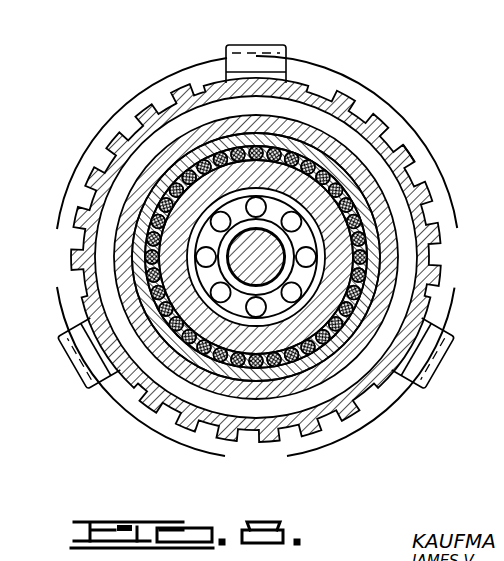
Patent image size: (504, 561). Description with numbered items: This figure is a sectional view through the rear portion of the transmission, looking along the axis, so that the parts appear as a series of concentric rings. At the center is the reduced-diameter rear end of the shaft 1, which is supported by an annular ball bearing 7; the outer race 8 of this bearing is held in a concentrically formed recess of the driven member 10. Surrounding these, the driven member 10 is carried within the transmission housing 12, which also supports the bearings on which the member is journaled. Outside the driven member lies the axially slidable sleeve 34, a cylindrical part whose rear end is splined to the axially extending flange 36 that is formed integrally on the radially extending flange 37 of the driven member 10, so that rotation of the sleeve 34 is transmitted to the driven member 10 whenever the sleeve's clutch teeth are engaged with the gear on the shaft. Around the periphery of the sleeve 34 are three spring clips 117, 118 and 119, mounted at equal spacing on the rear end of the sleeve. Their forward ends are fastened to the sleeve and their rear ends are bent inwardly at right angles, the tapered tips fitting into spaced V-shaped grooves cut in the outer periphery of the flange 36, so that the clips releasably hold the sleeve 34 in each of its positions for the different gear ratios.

The shaft 1 is at (255, 265).
The annular ball bearing 7 is at (306, 247).
The outer race 8 is at (308, 293).
The driven member 10 is at (356, 264).
The transmission housing 12 is at (387, 243).
The axially slidable sleeve 34 is at (378, 103).
The axially extending flange 36 is at (414, 152).
The radially extending flange 37 is at (404, 214).
The spring clip 117 is at (268, 44).
The spring clip 118 is at (433, 358).
The spring clip 119 is at (74, 360).